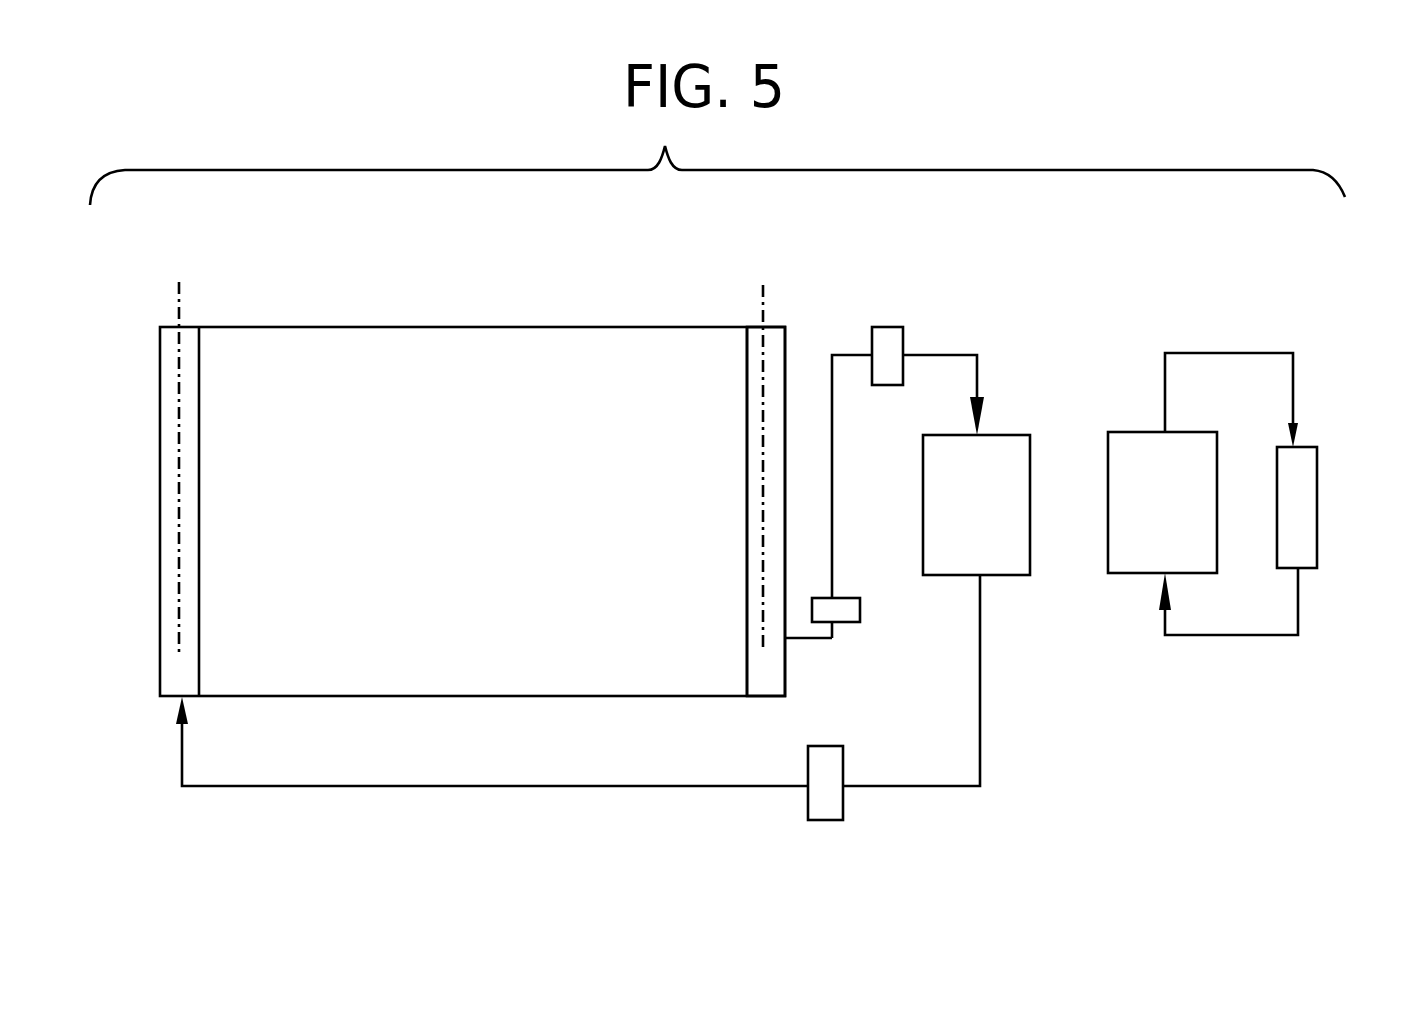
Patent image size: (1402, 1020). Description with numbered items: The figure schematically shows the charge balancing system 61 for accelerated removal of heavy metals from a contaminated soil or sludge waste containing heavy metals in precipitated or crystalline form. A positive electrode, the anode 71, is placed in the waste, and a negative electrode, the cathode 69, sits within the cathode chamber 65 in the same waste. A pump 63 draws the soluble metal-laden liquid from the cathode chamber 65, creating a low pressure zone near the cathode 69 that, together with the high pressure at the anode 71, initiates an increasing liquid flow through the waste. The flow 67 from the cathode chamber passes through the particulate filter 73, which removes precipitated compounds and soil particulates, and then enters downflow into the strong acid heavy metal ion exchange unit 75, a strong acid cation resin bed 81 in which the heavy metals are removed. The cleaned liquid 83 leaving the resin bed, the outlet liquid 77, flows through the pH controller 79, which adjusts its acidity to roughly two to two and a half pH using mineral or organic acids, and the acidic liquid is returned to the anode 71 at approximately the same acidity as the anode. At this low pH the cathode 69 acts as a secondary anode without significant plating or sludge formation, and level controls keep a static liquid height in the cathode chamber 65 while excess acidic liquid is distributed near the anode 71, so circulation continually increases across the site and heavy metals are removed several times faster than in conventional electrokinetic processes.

The charge balancing system 61 is at (466, 275).
The pump 63 is at (845, 622).
The cathode chamber 65 is at (773, 352).
The flow 67 is at (810, 638).
The cathode 69 is at (762, 303).
The anode 71 is at (179, 288).
The particulate filter 73 is at (893, 342).
The ion exchange unit 75 is at (1030, 463).
The outlet liquid 77 is at (980, 695).
The pH controller 79 is at (843, 795).
The strong acid cation resin bed 81 is at (1133, 573).
The cleaned liquid 83 is at (1317, 480).